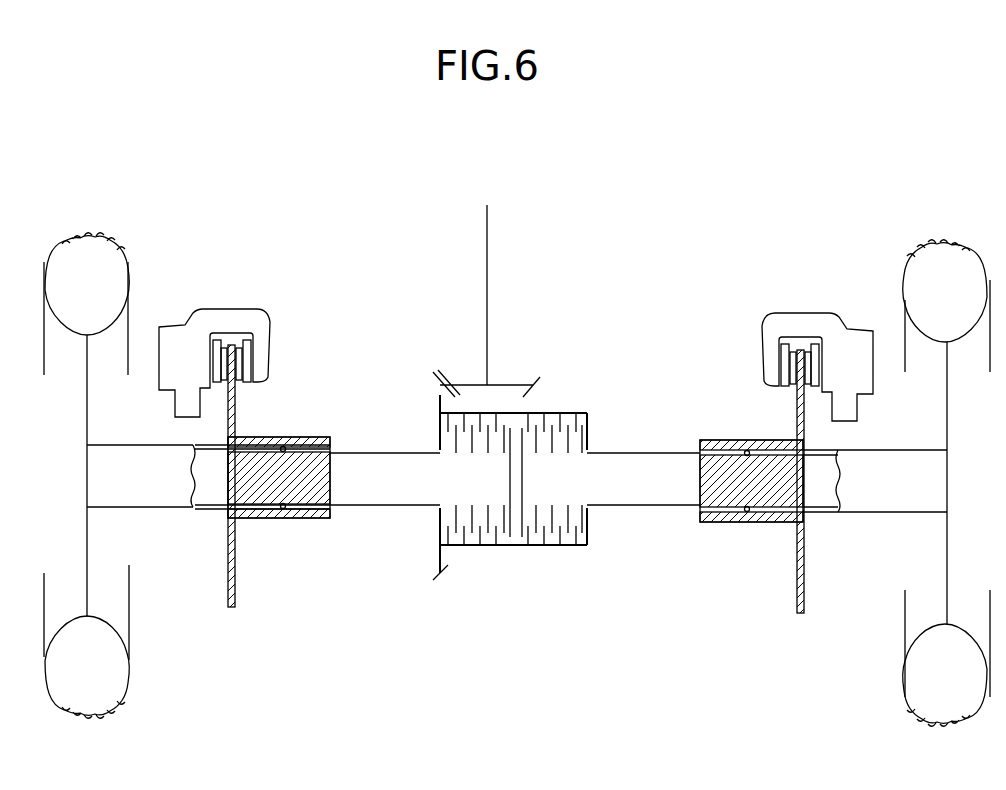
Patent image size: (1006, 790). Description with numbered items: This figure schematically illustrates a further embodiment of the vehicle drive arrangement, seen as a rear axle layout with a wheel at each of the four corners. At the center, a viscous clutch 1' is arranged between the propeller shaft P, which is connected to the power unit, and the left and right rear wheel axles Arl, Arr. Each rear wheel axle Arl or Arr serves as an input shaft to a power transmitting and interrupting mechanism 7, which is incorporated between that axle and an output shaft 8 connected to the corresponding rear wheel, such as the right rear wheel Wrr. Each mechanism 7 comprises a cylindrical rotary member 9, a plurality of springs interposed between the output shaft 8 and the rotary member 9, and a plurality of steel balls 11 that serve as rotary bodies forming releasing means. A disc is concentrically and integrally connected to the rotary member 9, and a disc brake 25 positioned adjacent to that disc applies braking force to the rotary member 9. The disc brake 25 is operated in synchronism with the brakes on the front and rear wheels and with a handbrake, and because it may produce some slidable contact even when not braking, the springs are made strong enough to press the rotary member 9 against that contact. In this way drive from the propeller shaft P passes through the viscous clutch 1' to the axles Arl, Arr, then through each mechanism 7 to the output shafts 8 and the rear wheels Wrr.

The rear wheel Wrr is at (910, 285).
The output shaft 8 is at (858, 530).
The wheel axle Arl is at (388, 497).
The wheel axle Arr is at (645, 505).
The cylindrical rotary member 9 is at (714, 440).
The steel balls 11 is at (745, 532).
The power transmitting and interrupting mechanism 7 is at (762, 420).
The disc brake 25 is at (775, 337).
The viscous clutch 1' is at (510, 492).
The propeller shaft P is at (487, 332).